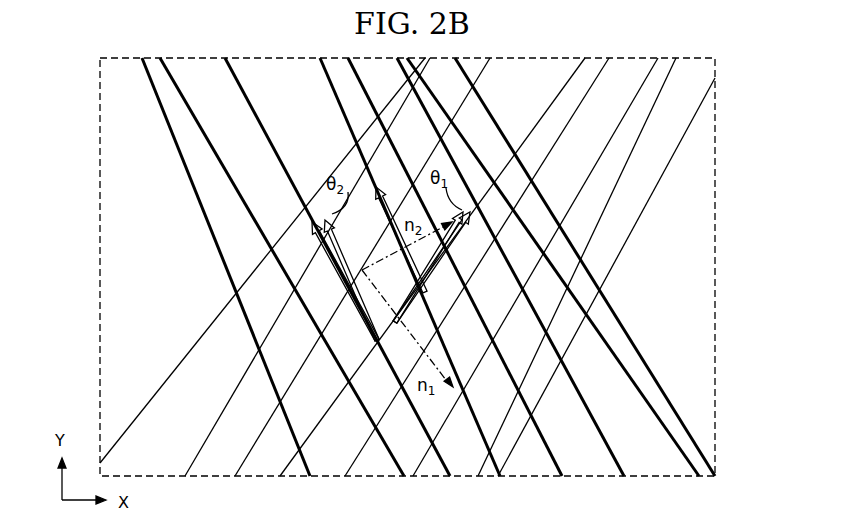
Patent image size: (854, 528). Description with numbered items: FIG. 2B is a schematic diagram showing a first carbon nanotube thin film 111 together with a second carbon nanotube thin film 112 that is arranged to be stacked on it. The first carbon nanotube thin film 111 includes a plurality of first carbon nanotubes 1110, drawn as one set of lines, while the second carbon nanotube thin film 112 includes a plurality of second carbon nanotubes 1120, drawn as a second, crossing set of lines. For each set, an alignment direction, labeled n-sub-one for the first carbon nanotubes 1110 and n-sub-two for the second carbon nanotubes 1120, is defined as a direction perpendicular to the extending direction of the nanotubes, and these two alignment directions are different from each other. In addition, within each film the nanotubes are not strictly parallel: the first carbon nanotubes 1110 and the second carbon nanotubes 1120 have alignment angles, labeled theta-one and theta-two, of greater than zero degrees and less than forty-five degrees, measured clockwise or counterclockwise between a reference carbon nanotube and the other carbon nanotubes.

The first carbon nanotube thin film 111 is at (728, 92).
The first carbon nanotubes 1110 is at (697, 116).
The second carbon nanotube thin film 112 is at (142, 105).
The second carbon nanotubes 1120 is at (206, 222).